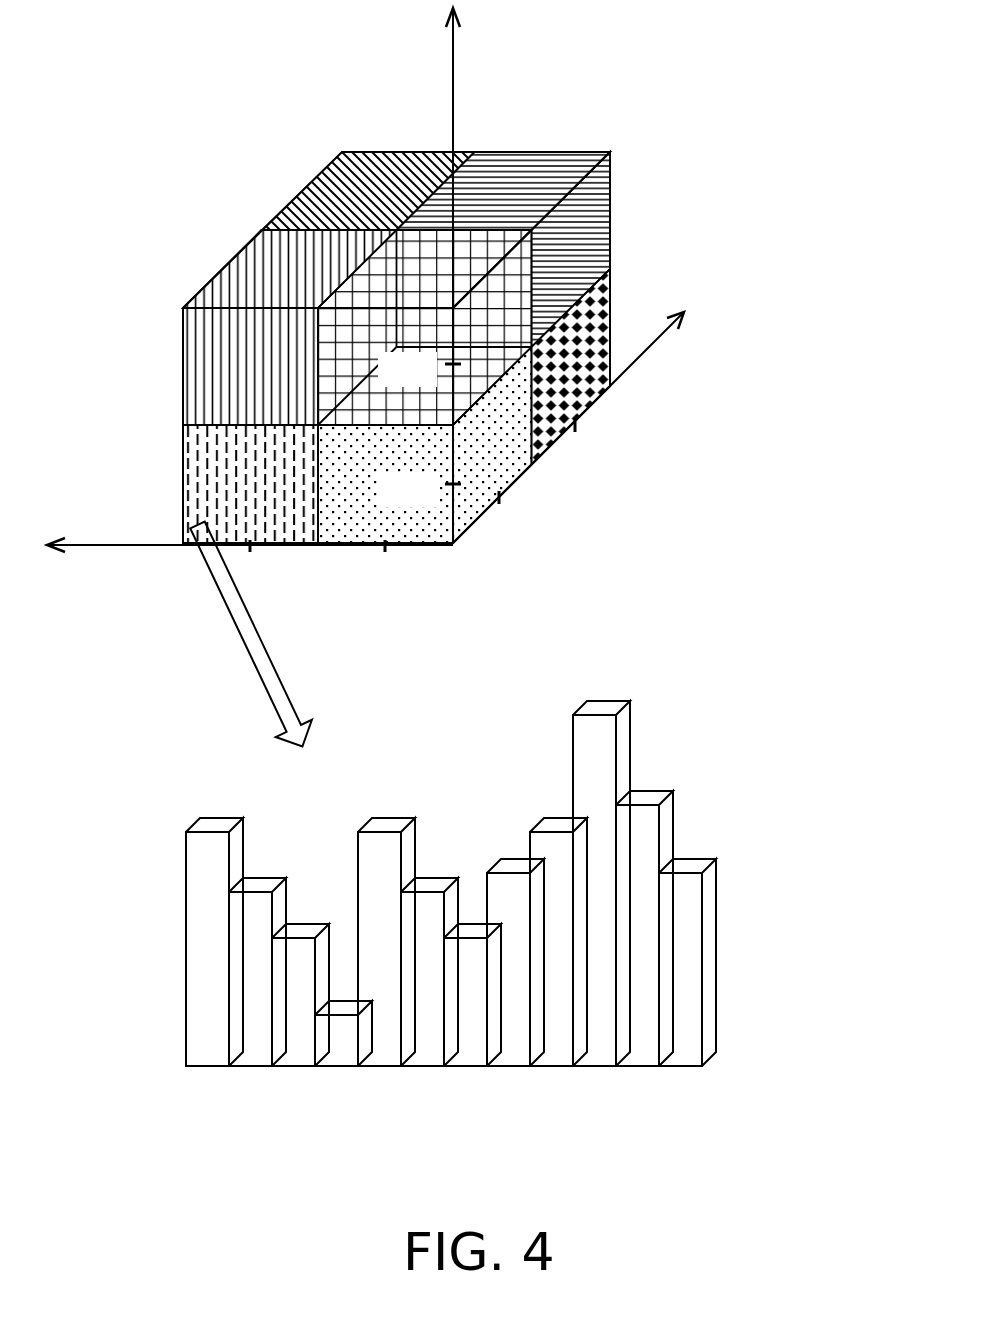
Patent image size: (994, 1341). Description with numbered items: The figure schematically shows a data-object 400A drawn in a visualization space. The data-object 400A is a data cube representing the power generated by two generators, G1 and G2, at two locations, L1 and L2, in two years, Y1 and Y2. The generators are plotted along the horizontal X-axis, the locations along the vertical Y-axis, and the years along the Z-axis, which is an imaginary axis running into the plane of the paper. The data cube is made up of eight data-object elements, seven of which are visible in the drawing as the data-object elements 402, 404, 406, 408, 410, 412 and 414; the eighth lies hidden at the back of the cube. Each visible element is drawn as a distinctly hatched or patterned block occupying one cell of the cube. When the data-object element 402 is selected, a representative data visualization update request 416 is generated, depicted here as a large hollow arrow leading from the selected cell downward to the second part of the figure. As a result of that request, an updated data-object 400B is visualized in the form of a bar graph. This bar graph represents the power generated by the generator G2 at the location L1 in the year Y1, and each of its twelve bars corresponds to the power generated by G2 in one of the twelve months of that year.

The data-object 400A is at (672, 212).
The updated data-object 400B is at (715, 688).
The data-object element 402 is at (206, 484).
The data-object element 404 is at (289, 307).
The data-object element 406 is at (516, 445).
The data-object element 408 is at (429, 500).
The data-object element 410 is at (604, 358).
The data-object element 412 is at (504, 216).
The data-object element 414 is at (368, 158).
The data visualization update request 416 is at (224, 634).